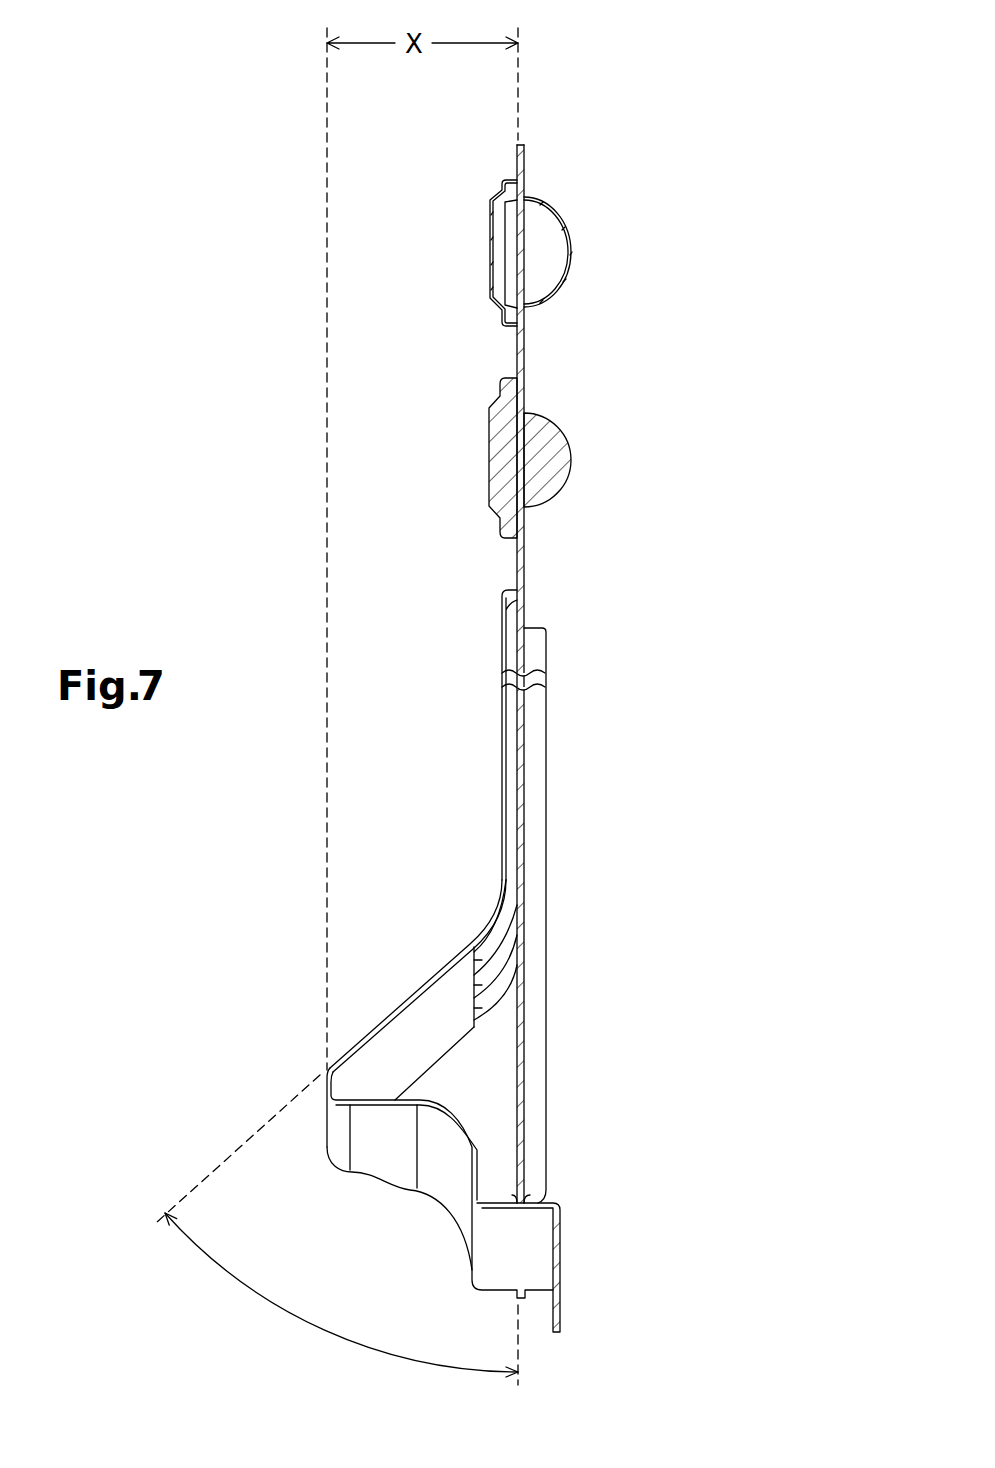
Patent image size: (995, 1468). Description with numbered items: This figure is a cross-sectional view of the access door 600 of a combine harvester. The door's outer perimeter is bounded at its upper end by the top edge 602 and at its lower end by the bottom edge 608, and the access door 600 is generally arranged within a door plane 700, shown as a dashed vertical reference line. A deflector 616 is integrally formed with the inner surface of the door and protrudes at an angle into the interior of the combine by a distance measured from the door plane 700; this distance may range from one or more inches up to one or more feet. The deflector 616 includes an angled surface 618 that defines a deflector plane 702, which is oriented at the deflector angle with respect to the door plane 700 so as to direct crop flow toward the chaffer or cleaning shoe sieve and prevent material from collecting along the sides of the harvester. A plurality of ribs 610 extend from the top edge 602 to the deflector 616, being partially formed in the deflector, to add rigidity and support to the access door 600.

The access door 600 is at (755, 132).
The top edge 602 is at (527, 150).
The bottom edge 608 is at (562, 1323).
The plurality of ribs 610 is at (498, 705).
The deflector 616 is at (383, 1020).
The angled surface 618 is at (425, 977).
The door plane 700 is at (518, 80).
The deflector plane 702 is at (195, 1188).